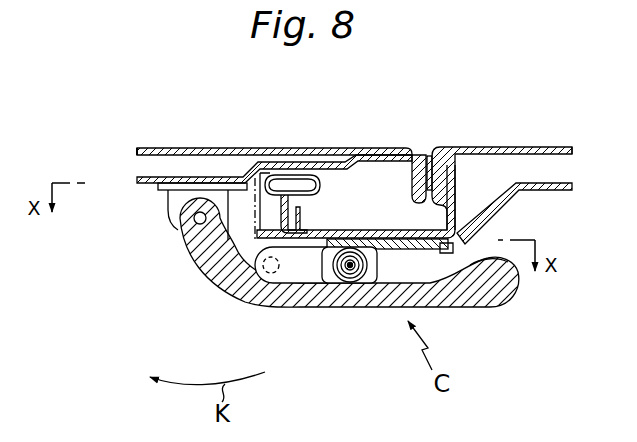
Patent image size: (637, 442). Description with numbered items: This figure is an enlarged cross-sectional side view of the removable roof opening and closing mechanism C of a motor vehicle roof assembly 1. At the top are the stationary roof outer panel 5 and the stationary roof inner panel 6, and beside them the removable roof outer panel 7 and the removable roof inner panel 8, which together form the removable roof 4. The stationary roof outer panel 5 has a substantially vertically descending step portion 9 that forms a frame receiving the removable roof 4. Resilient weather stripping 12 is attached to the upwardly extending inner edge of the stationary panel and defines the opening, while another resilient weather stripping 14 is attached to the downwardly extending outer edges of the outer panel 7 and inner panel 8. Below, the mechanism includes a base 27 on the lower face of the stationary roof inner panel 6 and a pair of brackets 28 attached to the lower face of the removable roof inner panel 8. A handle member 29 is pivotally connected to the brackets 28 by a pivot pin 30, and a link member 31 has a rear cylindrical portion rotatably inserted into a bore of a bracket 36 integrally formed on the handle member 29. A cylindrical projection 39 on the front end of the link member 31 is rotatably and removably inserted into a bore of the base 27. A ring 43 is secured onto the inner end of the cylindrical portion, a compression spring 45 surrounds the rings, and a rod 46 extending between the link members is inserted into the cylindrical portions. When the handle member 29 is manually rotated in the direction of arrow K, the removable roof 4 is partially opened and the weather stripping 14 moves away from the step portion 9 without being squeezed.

The panel assembly 1 is at (527, 145).
The removable roof 4 is at (205, 147).
The stationary roof outer panel 5 is at (572, 147).
The stationary roof inner panel 6 is at (560, 191).
The removable roof outer panel 7 is at (137, 147).
The removable roof inner panel 8 is at (143, 186).
The step portion 9 is at (453, 208).
The weather stripping 12 is at (306, 208).
The weather stripping 14 is at (433, 150).
The base 27 is at (443, 246).
The brackets 28 is at (172, 200).
The handle member 29 is at (473, 305).
The pivot pin 30 is at (193, 256).
The link member 31 is at (294, 275).
The bracket 36 is at (323, 272).
The cylindrical projection 39 is at (262, 300).
The ring 43 is at (372, 266).
The compression spring 45 is at (352, 249).
The rod 46 is at (350, 284).